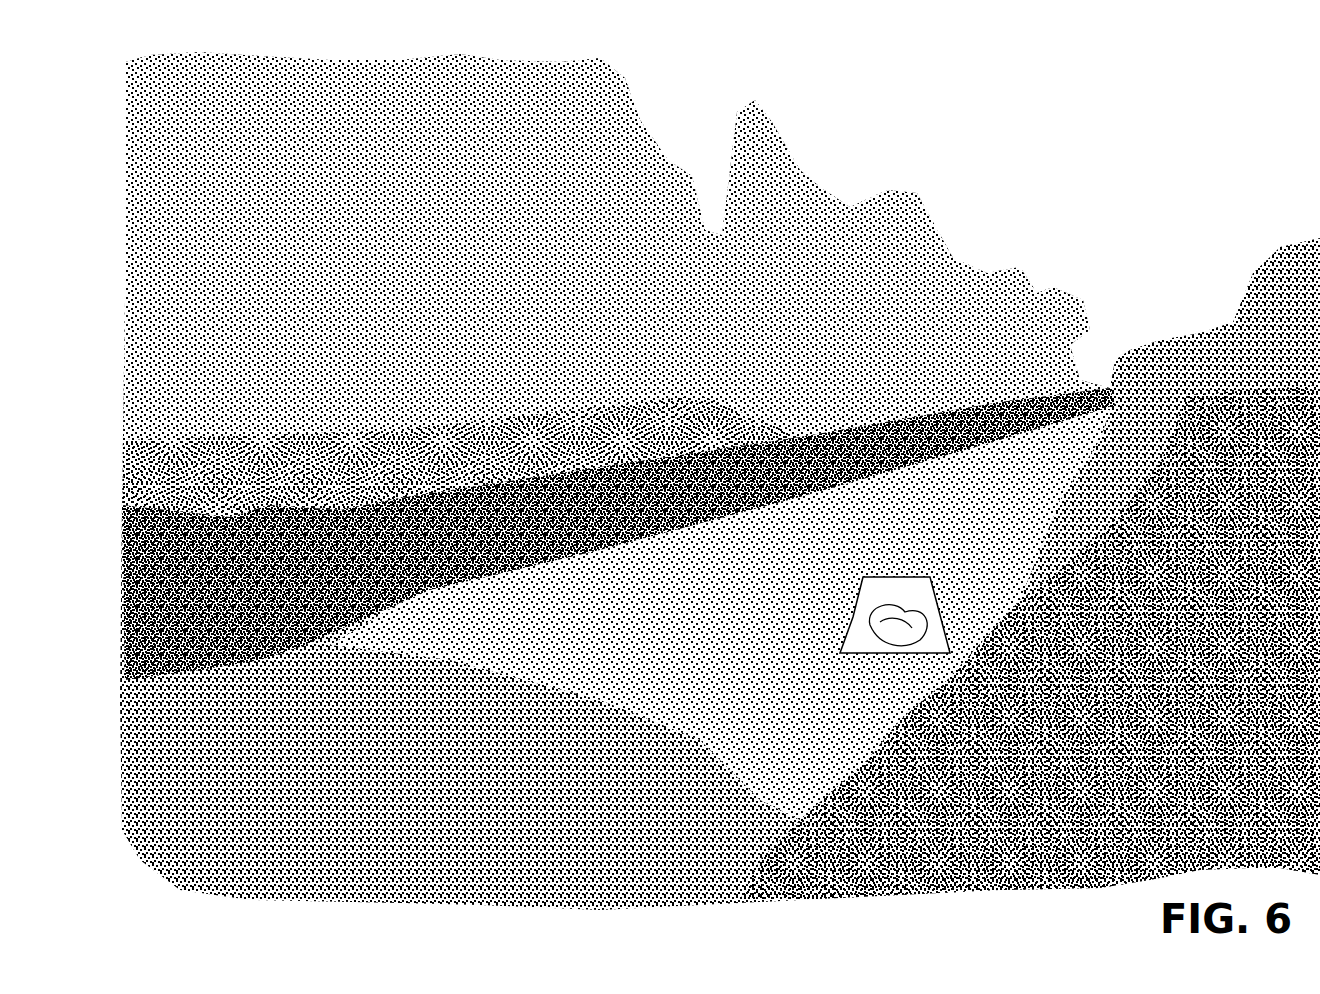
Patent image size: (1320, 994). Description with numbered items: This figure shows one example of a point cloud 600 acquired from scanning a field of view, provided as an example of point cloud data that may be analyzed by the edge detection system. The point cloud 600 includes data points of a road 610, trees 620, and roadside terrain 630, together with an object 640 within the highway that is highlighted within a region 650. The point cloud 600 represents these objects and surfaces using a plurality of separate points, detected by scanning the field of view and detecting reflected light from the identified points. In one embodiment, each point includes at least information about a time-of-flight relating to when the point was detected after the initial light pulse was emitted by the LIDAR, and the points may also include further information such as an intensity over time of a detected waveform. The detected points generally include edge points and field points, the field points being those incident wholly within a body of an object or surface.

The point cloud 600 is at (1204, 156).
The road 610 is at (323, 733).
The trees 620 is at (440, 107).
The roadside terrain 630 is at (1020, 768).
The object 640 is at (852, 658).
The region 650 is at (920, 552).